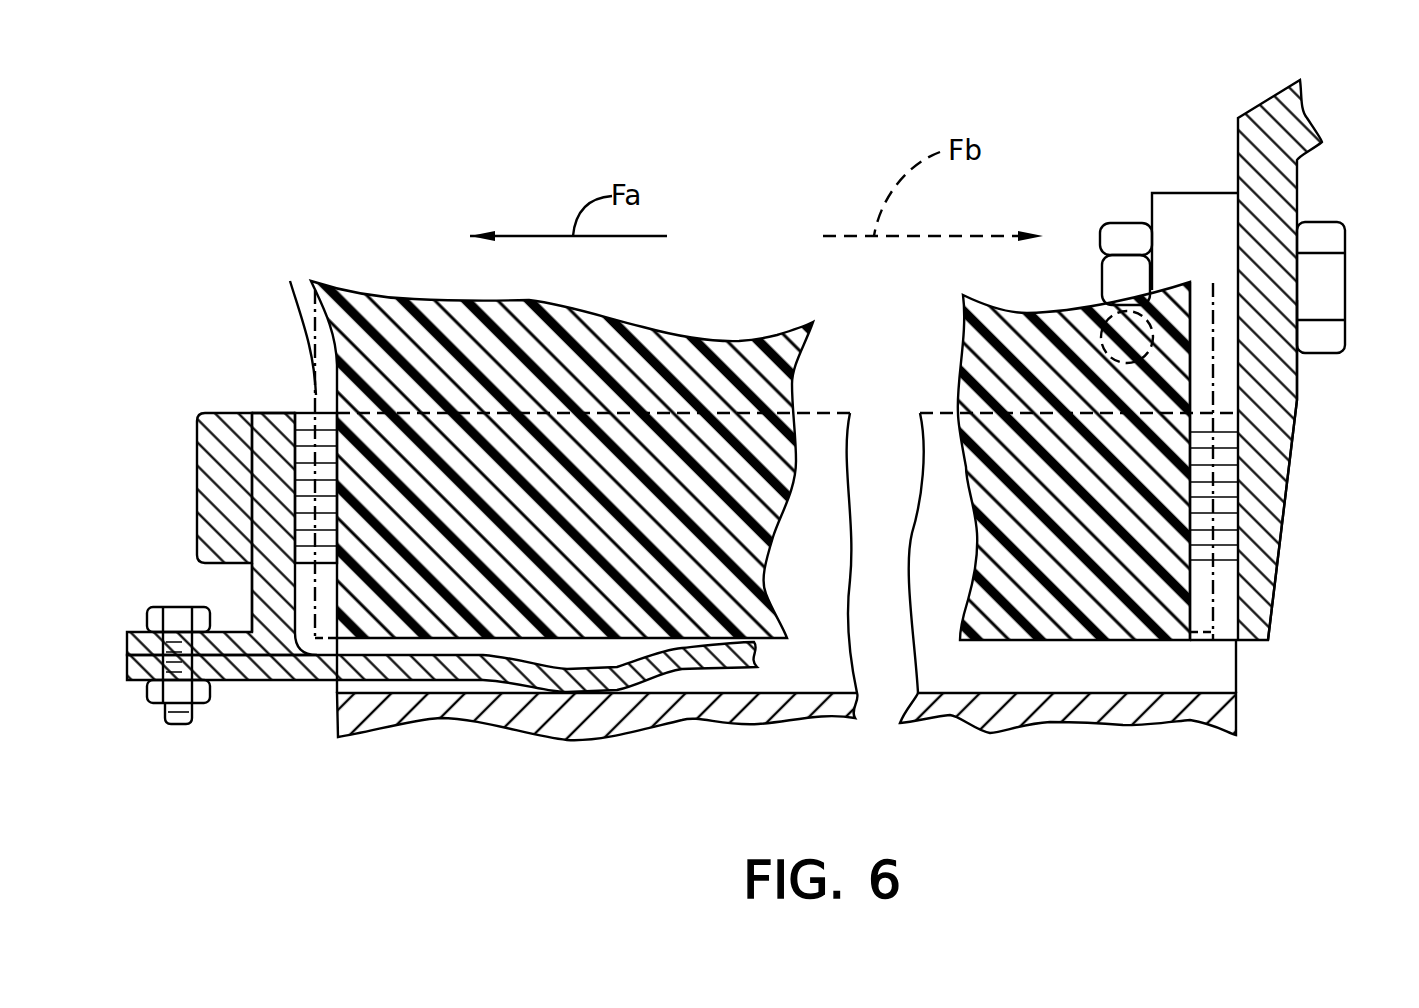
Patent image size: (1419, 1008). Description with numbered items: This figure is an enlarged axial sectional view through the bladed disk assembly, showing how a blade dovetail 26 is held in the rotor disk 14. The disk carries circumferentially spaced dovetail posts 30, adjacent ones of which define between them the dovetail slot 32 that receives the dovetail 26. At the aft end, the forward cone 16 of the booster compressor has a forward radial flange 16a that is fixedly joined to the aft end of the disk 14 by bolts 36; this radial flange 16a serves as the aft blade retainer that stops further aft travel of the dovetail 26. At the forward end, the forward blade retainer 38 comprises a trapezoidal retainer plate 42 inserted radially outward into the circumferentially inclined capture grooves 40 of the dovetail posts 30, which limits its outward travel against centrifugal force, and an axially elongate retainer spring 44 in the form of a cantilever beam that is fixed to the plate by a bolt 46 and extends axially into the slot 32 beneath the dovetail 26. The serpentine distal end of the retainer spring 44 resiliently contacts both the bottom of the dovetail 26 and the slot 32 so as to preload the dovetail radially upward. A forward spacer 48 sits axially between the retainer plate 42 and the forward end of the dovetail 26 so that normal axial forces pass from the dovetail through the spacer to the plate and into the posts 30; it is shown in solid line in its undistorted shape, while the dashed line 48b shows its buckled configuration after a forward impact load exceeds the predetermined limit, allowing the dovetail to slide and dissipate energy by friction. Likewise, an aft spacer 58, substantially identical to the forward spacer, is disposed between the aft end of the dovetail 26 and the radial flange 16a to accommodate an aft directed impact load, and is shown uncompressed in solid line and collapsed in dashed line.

The rotor disk 14 is at (1248, 712).
The forward cone 16 is at (1280, 95).
The forward radial flange 16a is at (1297, 443).
The blade dovetail 26 is at (770, 586).
The dovetail post 30 is at (197, 445).
The dovetail slot 32 is at (806, 694).
The bolt 36 is at (1128, 230).
The forward blade retainer 38 is at (234, 690).
The capture groove 40 is at (263, 410).
The retainer plate 42 is at (245, 590).
The retainer spring 44 is at (283, 685).
The bolt 46 is at (148, 619).
The forward spacer 48 is at (331, 465).
The buckled configuration of the forward spacer 48b is at (305, 410).
The aft spacer 58 is at (1255, 585).